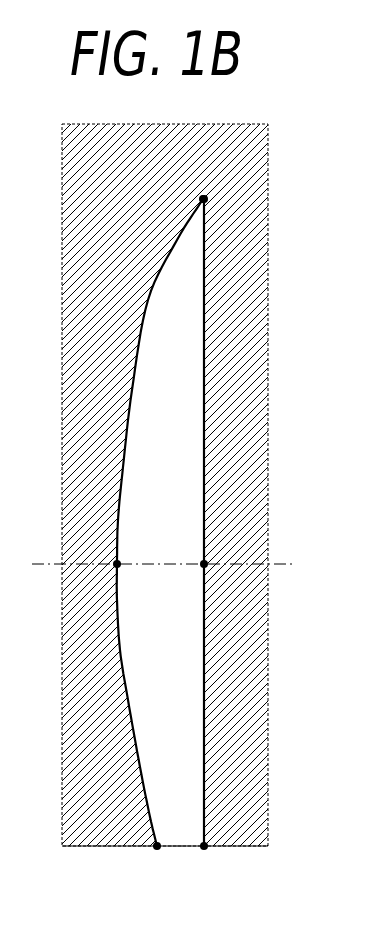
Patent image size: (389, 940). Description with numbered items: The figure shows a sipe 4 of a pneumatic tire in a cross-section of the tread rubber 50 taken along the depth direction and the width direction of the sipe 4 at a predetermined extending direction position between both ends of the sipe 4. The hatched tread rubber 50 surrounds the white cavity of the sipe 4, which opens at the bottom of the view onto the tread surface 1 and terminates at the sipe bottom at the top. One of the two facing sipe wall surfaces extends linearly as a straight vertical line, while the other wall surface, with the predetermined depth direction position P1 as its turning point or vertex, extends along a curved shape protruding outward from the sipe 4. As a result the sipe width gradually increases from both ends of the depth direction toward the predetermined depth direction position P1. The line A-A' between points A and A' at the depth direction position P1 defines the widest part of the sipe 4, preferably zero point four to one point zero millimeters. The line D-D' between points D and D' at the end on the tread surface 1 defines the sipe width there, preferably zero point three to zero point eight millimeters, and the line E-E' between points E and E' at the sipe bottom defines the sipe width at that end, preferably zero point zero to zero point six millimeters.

The tread rubber 50 is at (257, 143).
The sipe 4 is at (172, 417).
The tread surface 1 is at (237, 847).
The predetermined depth direction position P1 is at (181, 569).
The end point of line E-E' E is at (121, 183).
The end point of line E- E' is at (251, 184).
The end point of line A-A' A is at (74, 539).
The end point of line A- A' is at (253, 532).
The end point of line D-D' D is at (156, 803).
The end point of line D- D' is at (193, 818).